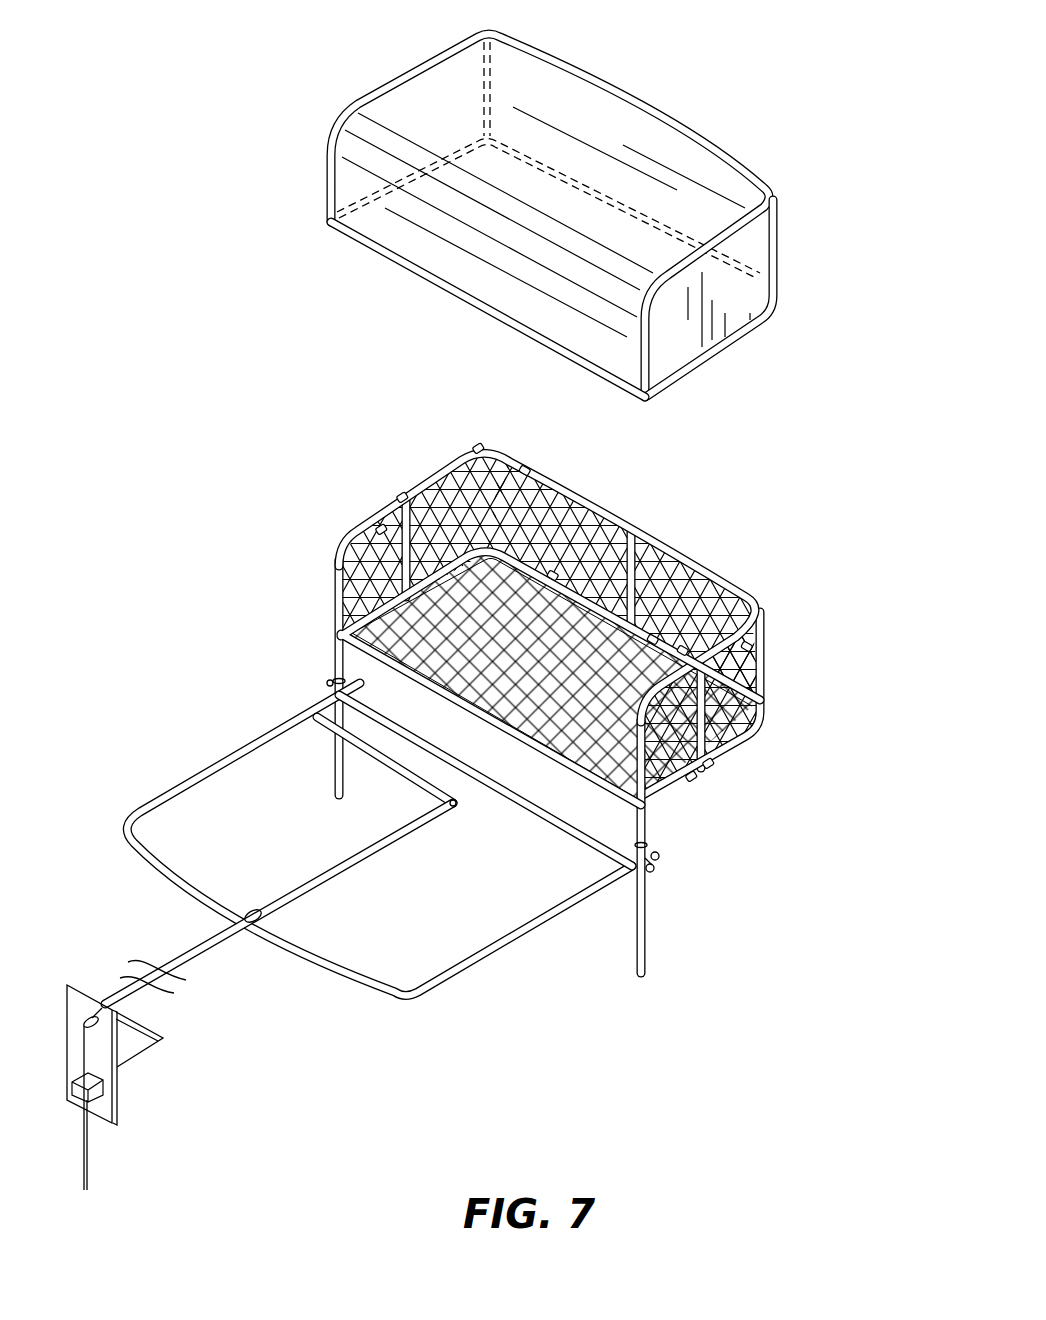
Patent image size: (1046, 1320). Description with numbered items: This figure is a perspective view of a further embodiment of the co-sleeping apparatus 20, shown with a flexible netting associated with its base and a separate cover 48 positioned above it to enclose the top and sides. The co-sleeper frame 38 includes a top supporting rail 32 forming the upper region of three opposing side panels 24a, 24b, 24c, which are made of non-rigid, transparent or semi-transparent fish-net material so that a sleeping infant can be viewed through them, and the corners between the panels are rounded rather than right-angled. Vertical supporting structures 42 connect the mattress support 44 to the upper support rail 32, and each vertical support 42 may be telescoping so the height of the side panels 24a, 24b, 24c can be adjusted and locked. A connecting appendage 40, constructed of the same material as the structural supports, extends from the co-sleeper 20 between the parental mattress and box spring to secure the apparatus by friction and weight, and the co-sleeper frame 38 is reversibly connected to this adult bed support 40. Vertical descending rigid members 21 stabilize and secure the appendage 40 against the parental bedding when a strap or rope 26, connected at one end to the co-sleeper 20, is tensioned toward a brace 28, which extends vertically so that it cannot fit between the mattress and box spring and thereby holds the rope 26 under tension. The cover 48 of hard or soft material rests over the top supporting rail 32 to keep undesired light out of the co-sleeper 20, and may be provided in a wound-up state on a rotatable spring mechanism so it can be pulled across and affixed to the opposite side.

The co-sleeping apparatus 20 is at (468, 795).
The vertical descending rigid members 21 is at (343, 770).
The side panel 24a is at (335, 567).
The side panel 24b is at (700, 606).
The side panel 24c is at (770, 716).
The strap or rope 26 is at (192, 965).
The brace 28 is at (125, 1090).
The top supporting rail 32 is at (572, 490).
The co-sleeper frame 38 is at (564, 626).
The connecting appendage 40 is at (387, 1006).
The vertical supporting structures 42 is at (401, 499).
The mattress support 44 is at (692, 785).
The cover 48 is at (662, 112).